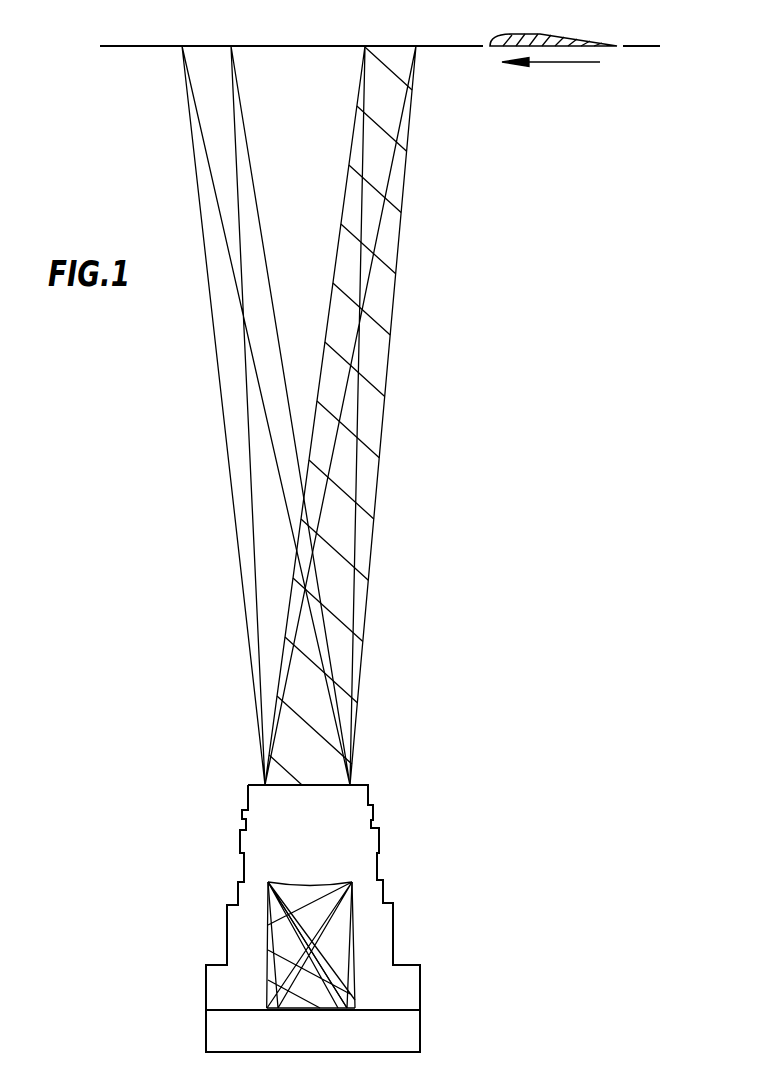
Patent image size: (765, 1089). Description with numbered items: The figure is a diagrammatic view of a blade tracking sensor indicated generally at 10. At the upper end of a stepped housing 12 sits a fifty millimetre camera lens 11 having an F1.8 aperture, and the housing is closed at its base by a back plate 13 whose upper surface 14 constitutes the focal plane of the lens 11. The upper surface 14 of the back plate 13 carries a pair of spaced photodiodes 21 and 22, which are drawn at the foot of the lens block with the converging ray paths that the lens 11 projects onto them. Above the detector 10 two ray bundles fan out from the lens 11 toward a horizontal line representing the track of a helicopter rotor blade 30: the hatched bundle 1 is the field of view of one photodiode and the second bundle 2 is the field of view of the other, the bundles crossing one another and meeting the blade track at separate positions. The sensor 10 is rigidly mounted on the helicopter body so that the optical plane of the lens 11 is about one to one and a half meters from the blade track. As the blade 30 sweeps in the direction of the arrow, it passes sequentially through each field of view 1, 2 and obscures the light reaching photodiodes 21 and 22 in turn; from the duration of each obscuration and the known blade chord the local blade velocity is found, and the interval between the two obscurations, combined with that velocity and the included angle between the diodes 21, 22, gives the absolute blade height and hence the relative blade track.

The first field of view 1 is at (340, 399).
The second field of view 2 is at (266, 399).
The helicopter blade 30 is at (539, 35).
The sensor 10 is at (384, 889).
The camera lens 11 is at (360, 803).
The housing 12 is at (396, 945).
The back plate 13 is at (408, 1032).
The upper surface 14 is at (400, 1009).
The first photodiode 21 is at (272, 1012).
The second photodiode 22 is at (351, 1012).